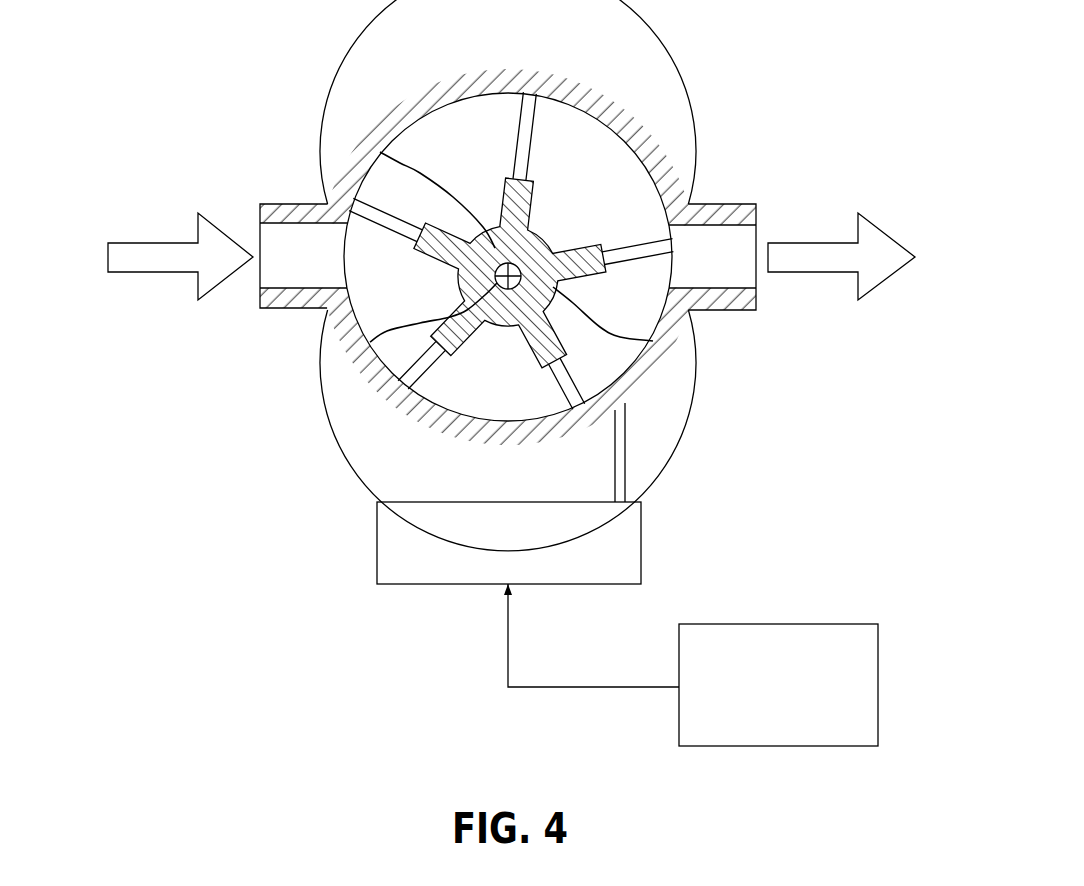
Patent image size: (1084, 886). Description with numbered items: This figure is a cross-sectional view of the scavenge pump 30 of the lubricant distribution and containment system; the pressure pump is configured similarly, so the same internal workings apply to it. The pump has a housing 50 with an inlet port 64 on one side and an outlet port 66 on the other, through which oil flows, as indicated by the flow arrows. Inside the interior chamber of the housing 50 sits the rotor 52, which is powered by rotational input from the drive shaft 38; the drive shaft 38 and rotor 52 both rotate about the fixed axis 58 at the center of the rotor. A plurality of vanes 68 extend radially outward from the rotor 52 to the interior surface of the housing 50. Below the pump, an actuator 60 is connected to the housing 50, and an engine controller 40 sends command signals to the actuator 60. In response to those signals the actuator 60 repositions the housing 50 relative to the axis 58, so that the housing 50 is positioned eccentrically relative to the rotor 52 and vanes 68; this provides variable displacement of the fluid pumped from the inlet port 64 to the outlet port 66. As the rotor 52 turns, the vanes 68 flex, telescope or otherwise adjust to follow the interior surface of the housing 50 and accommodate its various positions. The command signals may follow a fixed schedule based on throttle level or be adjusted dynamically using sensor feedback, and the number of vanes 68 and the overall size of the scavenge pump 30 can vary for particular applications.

The scavenge pump 30 is at (509, 275).
The drive shaft 38 is at (653, 341).
The engine controller 40 is at (778, 624).
The housing 50 is at (508, 67).
The rotor 52 is at (380, 152).
The fixed axis 58 is at (370, 342).
The actuator 60 is at (377, 542).
The inlet port 64 is at (258, 283).
The outlet port 66 is at (757, 232).
The vanes 68 is at (430, 370).